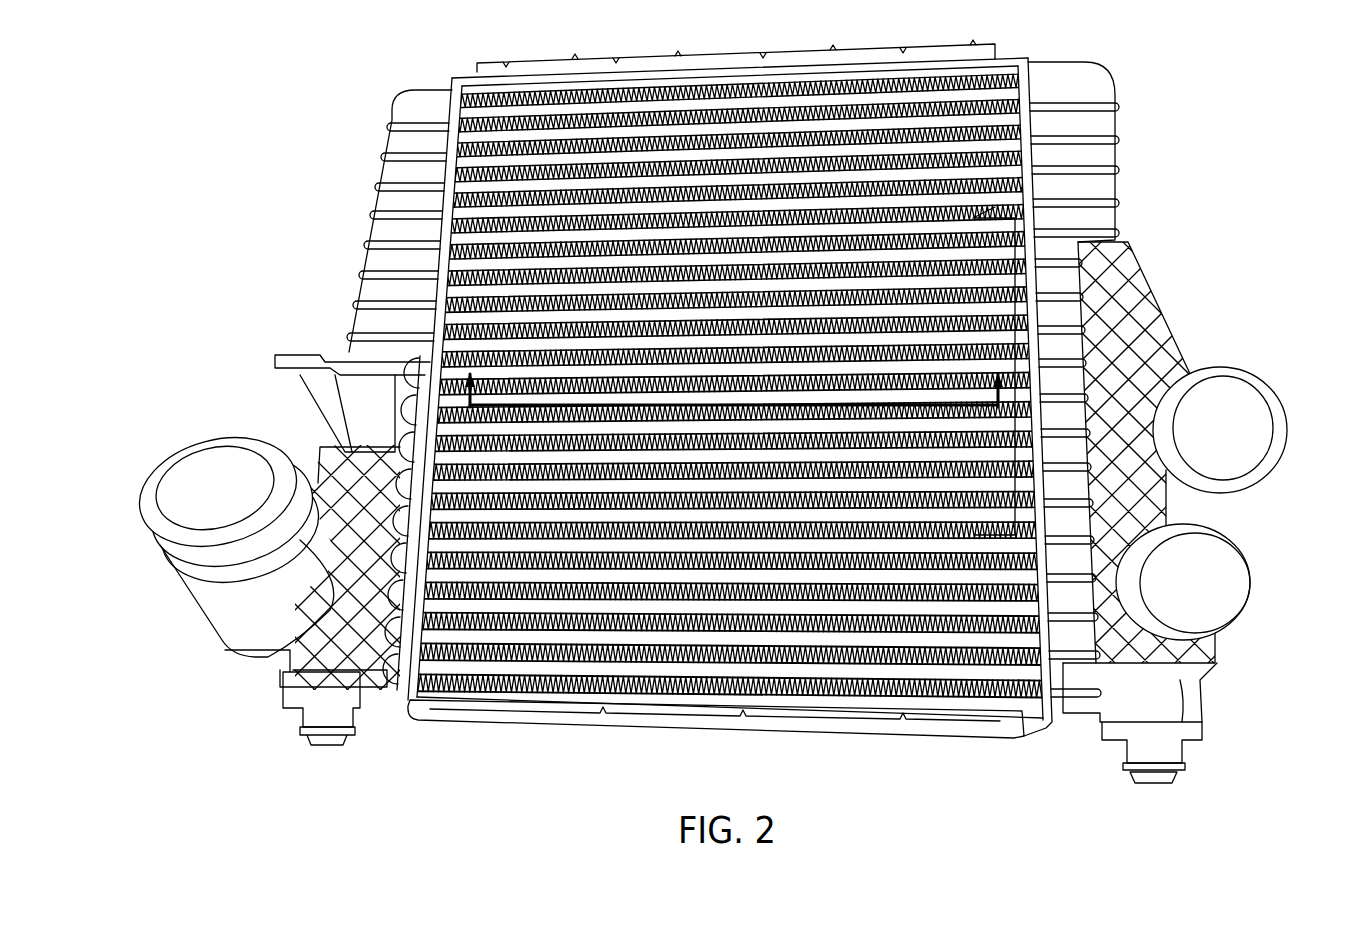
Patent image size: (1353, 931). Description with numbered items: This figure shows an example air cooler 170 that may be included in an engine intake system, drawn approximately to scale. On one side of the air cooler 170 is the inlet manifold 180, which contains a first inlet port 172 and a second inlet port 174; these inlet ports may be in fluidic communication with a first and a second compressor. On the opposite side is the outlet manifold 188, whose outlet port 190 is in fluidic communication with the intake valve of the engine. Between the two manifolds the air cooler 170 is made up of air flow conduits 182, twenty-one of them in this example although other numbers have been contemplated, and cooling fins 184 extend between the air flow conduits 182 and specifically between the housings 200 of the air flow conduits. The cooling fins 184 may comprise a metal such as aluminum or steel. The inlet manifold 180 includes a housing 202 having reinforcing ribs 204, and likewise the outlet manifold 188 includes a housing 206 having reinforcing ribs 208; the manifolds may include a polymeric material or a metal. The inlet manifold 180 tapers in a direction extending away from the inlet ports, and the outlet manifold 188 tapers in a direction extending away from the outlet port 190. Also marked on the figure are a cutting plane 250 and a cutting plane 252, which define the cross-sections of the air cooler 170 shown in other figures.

The air cooler 170 is at (1246, 123).
The first inlet port 172 is at (1293, 362).
The second inlet port 174 is at (1260, 523).
The inlet manifold 180 is at (1227, 782).
The air flow conduits 182 is at (802, 576).
The cooling fins 184 is at (543, 588).
The outlet manifold 188 is at (403, 755).
The outlet port 190 is at (137, 430).
The housings of the air flow conduits 200 is at (740, 640).
The housing 202 is at (1138, 320).
The reinforcing ribs 204 is at (1128, 285).
The housing 206 is at (360, 326).
The reinforcing ribs 208 is at (360, 275).
The cutting plane 250 is at (1030, 373).
The cutting plane 252 is at (733, 410).